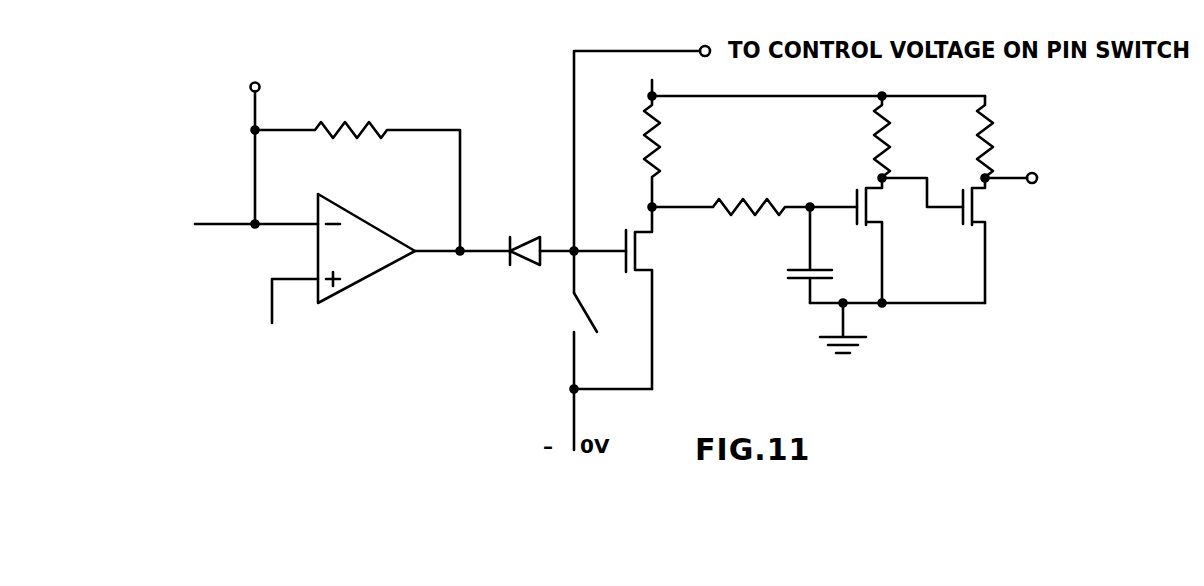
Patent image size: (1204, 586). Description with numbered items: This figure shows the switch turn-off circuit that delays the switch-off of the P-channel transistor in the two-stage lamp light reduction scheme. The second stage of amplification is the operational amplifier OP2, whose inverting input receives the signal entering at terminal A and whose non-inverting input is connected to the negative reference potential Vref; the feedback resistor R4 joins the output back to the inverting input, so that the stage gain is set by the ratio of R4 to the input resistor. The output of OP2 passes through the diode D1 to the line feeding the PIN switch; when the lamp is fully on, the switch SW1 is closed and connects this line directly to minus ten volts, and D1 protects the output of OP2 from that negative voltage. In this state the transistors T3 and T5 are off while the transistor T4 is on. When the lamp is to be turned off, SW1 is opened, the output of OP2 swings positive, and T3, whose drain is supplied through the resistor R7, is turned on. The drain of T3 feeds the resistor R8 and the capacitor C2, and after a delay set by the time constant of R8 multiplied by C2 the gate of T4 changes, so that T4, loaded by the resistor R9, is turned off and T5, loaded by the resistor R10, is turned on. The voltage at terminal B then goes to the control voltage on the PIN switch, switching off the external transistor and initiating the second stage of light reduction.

The input terminal A is at (256, 152).
The resistor R4 is at (357, 175).
The operational amplifier OP2 is at (414, 248).
The negative reference potential Vref is at (278, 319).
The diode D1 is at (568, 234).
The switch SW1 is at (615, 248).
The transistor T3 is at (651, 298).
The resistor R7 is at (814, 142).
The resistor R8 is at (754, 193).
The capacitor C2 is at (871, 280).
The transistor T4 is at (903, 239).
The resistor R9 is at (865, 136).
The transistor T5 is at (988, 239).
The resistor R10 is at (1004, 137).
The output terminal B is at (1020, 179).